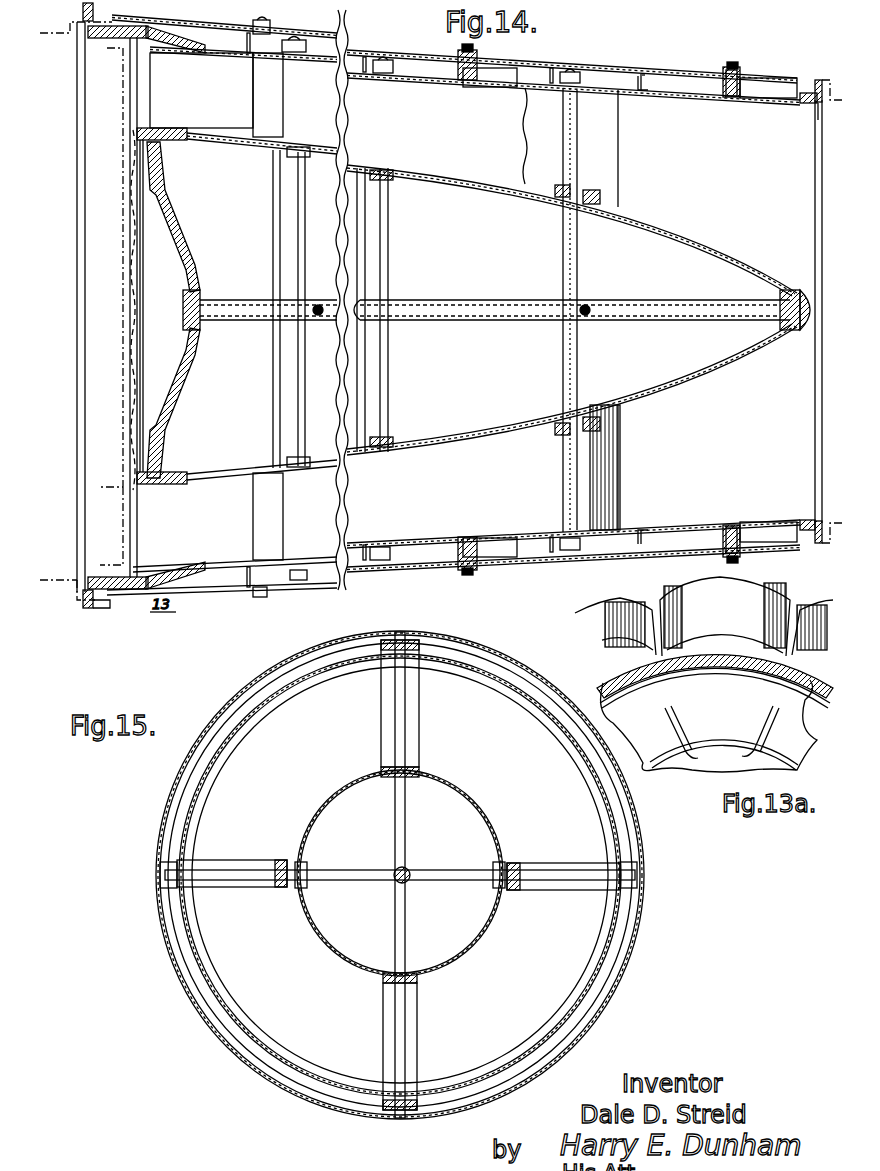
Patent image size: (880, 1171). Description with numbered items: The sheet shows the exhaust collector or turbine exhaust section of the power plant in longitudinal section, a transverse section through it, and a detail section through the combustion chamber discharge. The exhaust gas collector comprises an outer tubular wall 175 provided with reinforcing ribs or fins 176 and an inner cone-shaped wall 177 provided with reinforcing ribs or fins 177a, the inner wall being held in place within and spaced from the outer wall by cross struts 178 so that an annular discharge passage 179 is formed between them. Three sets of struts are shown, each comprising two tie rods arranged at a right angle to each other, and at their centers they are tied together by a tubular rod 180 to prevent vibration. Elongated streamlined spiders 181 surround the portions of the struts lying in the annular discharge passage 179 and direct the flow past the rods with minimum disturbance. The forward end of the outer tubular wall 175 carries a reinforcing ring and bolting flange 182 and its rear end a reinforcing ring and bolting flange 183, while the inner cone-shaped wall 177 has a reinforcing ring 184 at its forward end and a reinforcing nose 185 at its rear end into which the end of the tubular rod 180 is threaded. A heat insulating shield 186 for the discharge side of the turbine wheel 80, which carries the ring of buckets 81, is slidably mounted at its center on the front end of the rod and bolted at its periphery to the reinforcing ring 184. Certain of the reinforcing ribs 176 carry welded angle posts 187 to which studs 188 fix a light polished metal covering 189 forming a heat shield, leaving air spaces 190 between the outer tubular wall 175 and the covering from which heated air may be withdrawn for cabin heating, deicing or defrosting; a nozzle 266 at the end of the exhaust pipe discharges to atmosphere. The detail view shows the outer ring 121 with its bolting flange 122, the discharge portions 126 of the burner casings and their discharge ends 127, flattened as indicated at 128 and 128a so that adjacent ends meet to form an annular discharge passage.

In FIG. 14, the turbine wheel 80 is at (123, 490).
In FIG. 14, the ring of buckets 81 is at (126, 72).
In FIG. 14, the outer ring 121 is at (74, 573).
In FIG. 13A, the outer ring 121 is at (803, 690).
In FIG. 14, the bolting flange 122 is at (85, 610).
In FIG. 13A, the discharge portions of the burner casings 126 is at (704, 616).
In FIG. 13A, the discharge ends 127 is at (748, 697).
In FIG. 13A, the flattened portion 128 is at (670, 712).
In FIG. 13A, the rib fillet 128a is at (680, 790).
In FIG. 14, the outer tubular wall 175 is at (340, 51).
In FIG. 15, the outer tubular wall 175 is at (464, 648).
In FIG. 14, the reinforcing ribs or fins 176 is at (642, 74).
In FIG. 15, the reinforcing ribs or fins 176 is at (508, 666).
In FIG. 14, the inner cone-shaped wall 177 is at (236, 140).
In FIG. 15, the inner cone-shaped wall 177 is at (472, 799).
In FIG. 14, the reinforcing ribs or fins 177a is at (552, 200).
In FIG. 14, the cross struts 178 is at (574, 296).
In FIG. 15, the cross struts 178 is at (392, 868).
In FIG. 14, the annular discharge passage 179 is at (201, 90).
In FIG. 14, the tubular rod 180 is at (486, 310).
In FIG. 15, the tubular rod 180 is at (408, 868).
In FIG. 14, the streamlined spiders 181 is at (452, 169).
In FIG. 15, the streamlined spiders 181 is at (408, 725).
In FIG. 14, the reinforcing ring and bolting flange 182 is at (104, 608).
In FIG. 14, the reinforcing ring and bolting flange 183 is at (817, 82).
In FIG. 14, the reinforcing ring 184 is at (156, 128).
In FIG. 14, the reinforcing nose 185 is at (804, 334).
In FIG. 14, the heat insulating shield 186 is at (176, 209).
In FIG. 14, the angle posts 187 is at (470, 70).
In FIG. 14, the studs 188 is at (458, 44).
In FIG. 14, the light polished metal covering 189 is at (706, 75).
In FIG. 14, the air spaces 190 is at (586, 310).
In FIG. 14, the nozzle 266 is at (818, 114).